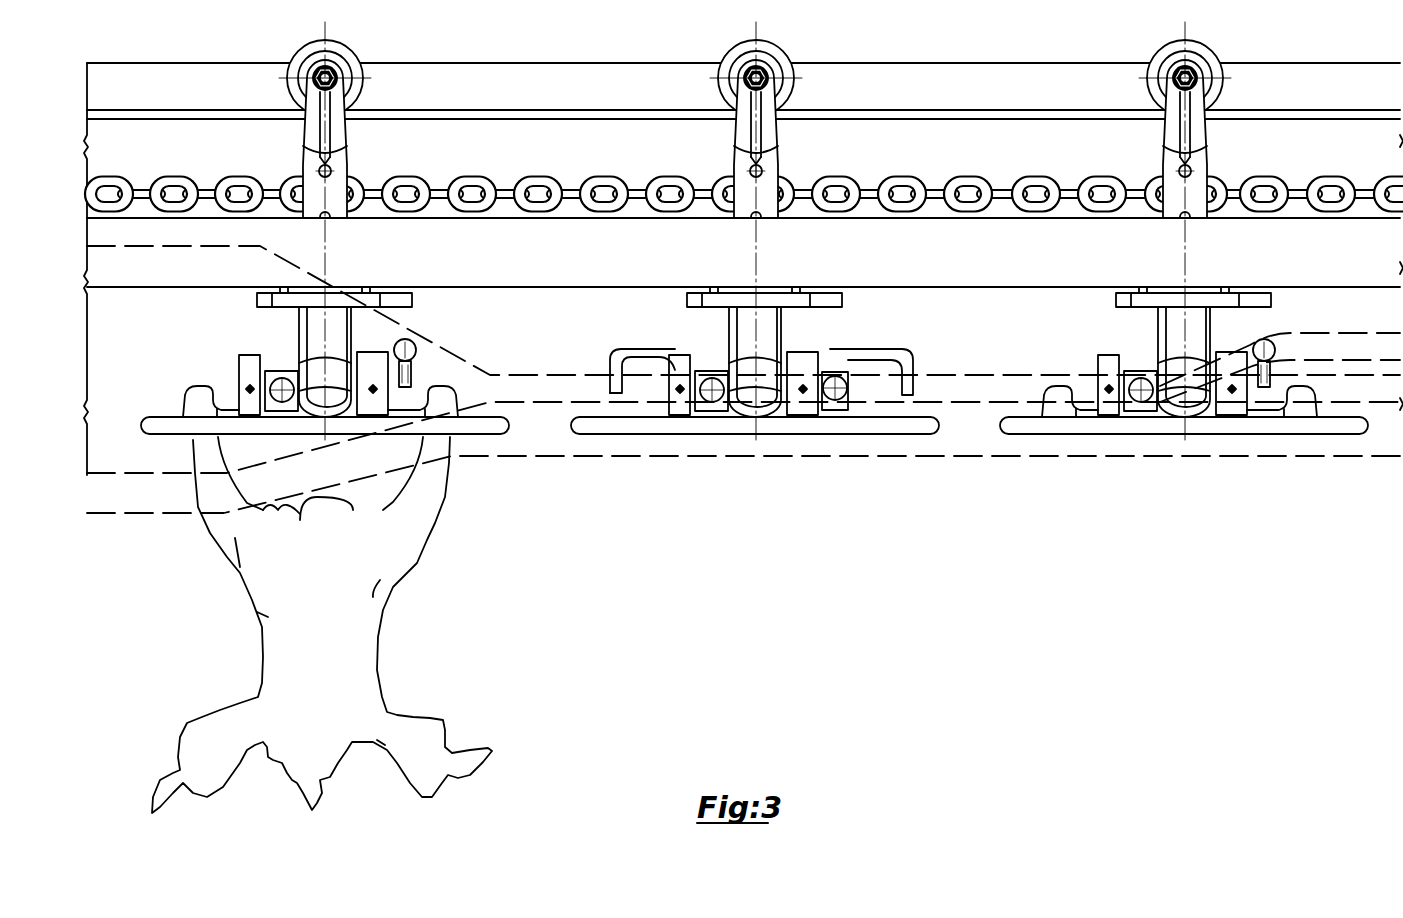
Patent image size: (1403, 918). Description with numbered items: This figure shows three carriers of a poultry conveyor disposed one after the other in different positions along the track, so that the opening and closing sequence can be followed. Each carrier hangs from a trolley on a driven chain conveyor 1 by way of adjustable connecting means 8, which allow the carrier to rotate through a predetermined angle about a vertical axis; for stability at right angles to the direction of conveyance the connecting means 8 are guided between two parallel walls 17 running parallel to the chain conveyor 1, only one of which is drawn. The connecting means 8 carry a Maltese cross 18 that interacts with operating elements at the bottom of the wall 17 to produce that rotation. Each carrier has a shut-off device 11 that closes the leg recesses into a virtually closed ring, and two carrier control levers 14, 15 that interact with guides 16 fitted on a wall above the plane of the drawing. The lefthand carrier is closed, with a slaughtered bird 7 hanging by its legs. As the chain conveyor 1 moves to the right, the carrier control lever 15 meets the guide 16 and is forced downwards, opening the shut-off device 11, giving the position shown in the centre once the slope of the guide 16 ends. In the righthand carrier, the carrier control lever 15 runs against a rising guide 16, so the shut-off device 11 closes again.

The chain conveyor 1 is at (1283, 196).
The slaughtered bird 7 is at (383, 580).
The connecting means 8 is at (348, 158).
The shut-off device 11 is at (630, 355).
The carrier control lever 14 is at (272, 380).
The carrier control lever 15 is at (407, 341).
The guide 16 is at (1373, 345).
The wall 17 is at (1037, 270).
The Maltese cross 18 is at (858, 304).